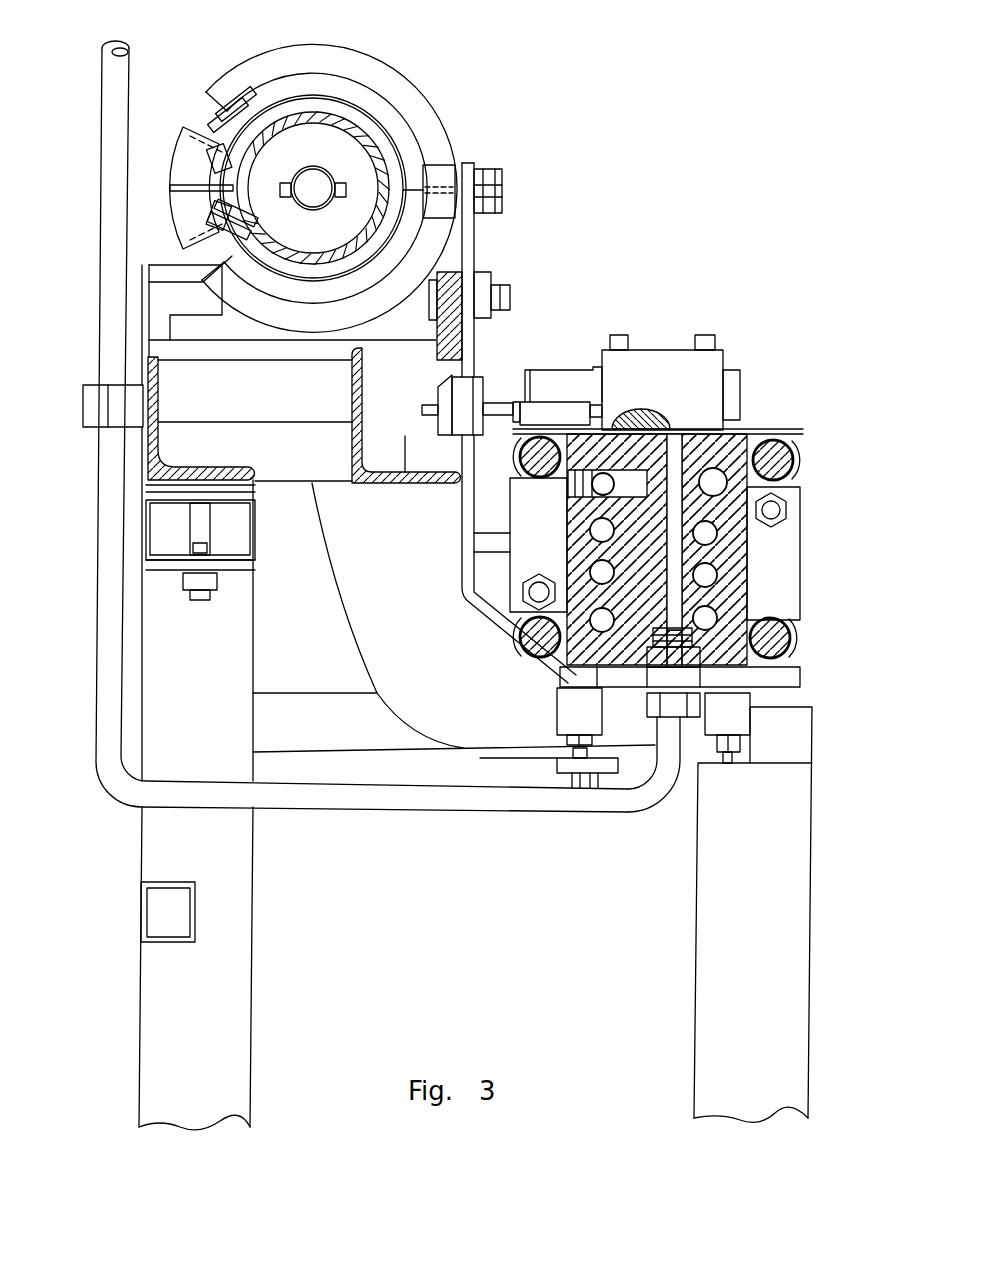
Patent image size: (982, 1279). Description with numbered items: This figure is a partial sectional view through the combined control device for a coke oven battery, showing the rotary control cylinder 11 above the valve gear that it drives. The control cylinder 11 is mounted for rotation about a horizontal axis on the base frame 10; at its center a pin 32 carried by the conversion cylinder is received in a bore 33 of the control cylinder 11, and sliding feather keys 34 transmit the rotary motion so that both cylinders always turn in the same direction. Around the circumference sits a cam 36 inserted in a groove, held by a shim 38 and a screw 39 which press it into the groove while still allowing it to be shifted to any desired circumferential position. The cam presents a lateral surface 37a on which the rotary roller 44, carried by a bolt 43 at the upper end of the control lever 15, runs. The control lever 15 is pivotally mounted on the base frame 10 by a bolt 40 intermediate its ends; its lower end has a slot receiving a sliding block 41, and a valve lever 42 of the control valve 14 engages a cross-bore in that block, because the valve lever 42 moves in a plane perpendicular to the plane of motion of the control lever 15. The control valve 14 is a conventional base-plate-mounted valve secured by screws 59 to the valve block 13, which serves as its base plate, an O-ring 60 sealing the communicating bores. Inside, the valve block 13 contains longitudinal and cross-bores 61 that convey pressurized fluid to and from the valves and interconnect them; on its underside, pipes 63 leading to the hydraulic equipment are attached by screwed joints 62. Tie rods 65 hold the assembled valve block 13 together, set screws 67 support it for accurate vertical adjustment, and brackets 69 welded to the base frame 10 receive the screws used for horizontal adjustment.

The base frame 10 is at (232, 378).
The control cylinder 11 is at (325, 115).
The valve block 13 is at (650, 637).
The control valve 14 is at (653, 362).
The control lever 15 is at (468, 247).
The pin 32 is at (303, 176).
The bore 33 is at (313, 188).
The sliding feather keys 34 is at (284, 183).
The cam 36 is at (183, 205).
The lateral surface of cam 37a is at (410, 105).
The shim 38 is at (217, 143).
The screw 39 is at (230, 135).
The bolt 40 is at (503, 290).
The sliding block 41 is at (477, 395).
The valve lever 42 is at (505, 403).
The bolt 43 is at (492, 183).
The rotary roller 44 is at (440, 170).
The screw 59 is at (620, 340).
The O-ring 60 is at (668, 425).
The bore 61 is at (715, 480).
The screwed joint 62 is at (670, 717).
The pipe 63 is at (122, 792).
The tie rod 65 is at (775, 462).
The set screw 67 is at (582, 737).
The bracket 69 is at (478, 735).